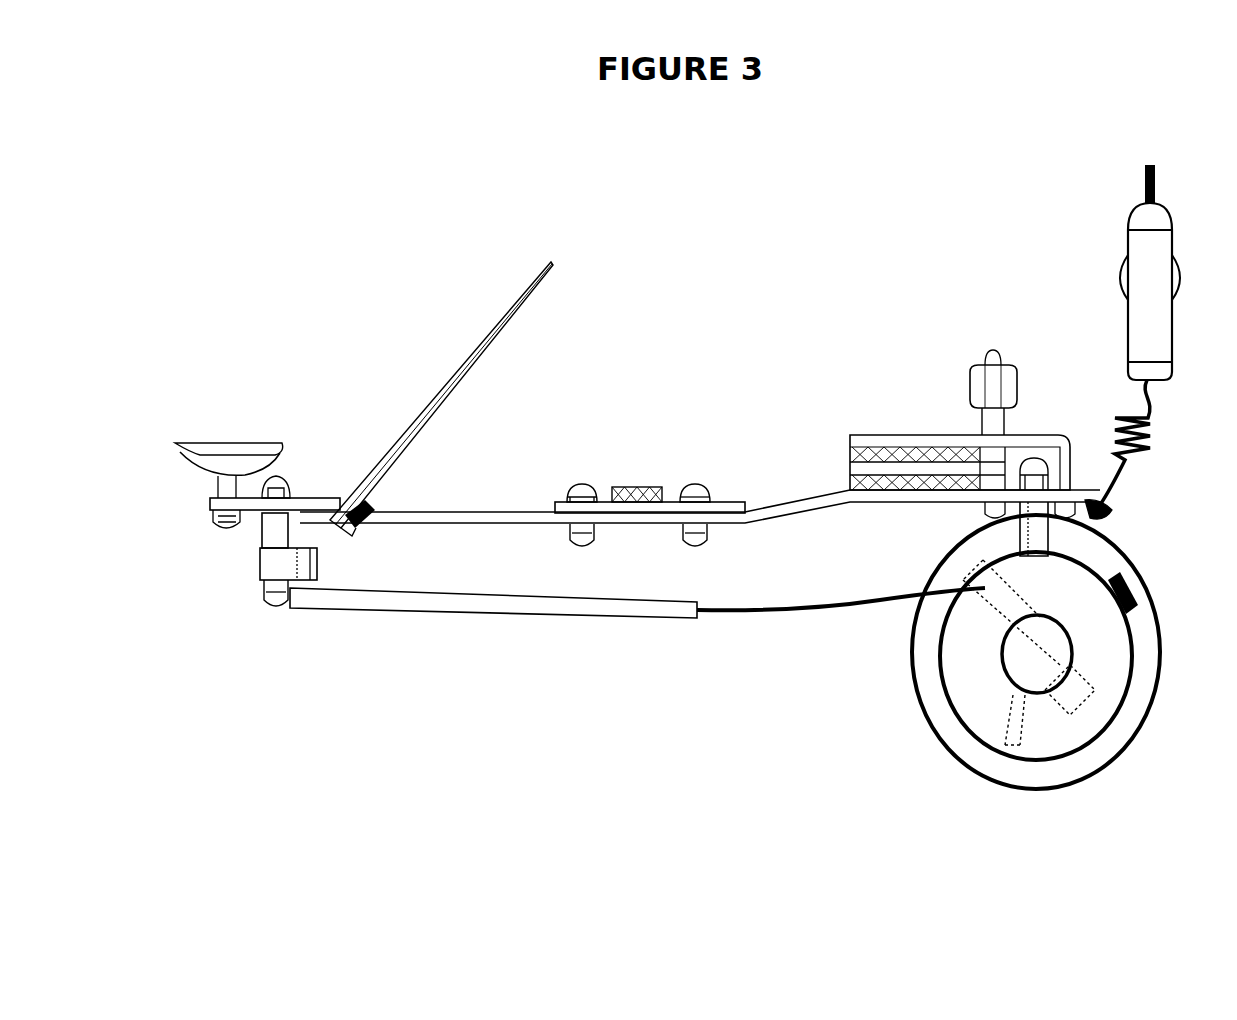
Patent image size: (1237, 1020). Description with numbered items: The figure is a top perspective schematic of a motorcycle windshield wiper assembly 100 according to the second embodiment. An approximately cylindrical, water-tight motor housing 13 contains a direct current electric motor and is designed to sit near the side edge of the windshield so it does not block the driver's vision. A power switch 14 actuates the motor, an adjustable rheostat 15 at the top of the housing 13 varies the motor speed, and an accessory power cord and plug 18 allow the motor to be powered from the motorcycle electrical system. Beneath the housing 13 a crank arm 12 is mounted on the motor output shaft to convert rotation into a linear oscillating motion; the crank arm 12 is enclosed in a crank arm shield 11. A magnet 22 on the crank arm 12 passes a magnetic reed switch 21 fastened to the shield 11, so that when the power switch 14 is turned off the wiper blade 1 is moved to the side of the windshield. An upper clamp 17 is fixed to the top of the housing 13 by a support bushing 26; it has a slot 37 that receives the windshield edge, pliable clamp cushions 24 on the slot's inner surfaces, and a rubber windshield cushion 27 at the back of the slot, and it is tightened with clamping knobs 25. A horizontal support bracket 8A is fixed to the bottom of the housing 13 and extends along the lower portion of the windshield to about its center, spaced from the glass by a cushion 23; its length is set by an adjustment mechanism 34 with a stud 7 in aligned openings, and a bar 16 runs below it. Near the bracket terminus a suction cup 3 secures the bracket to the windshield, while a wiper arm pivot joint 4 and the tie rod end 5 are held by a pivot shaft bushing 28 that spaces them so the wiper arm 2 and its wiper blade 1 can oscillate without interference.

The wiper assembly 100 is at (684, 226).
The wiper blade 1 is at (410, 435).
The wiper arm 2 is at (358, 532).
The suction cup 3 is at (212, 441).
The horizontal support bracket 8A is at (310, 498).
The pivot shaft bushing 28 is at (262, 540).
The wiper arm pivot joint 4 is at (262, 573).
The tie rod end 5 is at (275, 606).
The lower bar 16 is at (775, 612).
The adjustment mechanism 34 is at (630, 527).
The stud 7 is at (578, 488).
The cushion 23 is at (640, 487).
The upper clamp 17 is at (852, 440).
The clamp cushions 24 is at (850, 455).
The slot 37 is at (840, 468).
The rubber windshield cushion 27 is at (993, 470).
The clamping knobs 25 is at (1008, 364).
The support bushing 26 is at (1038, 532).
The accessory power cord and plug 18 is at (1130, 209).
The motor housing 13 is at (1163, 640).
The crank arm shield 11 is at (1072, 757).
The adjustable rheostat 15 is at (1008, 685).
The power switch 14 is at (1122, 586).
The crank arm 12 is at (988, 612).
The magnetic reed switch 21 is at (1017, 700).
The magnet 22 is at (1075, 692).